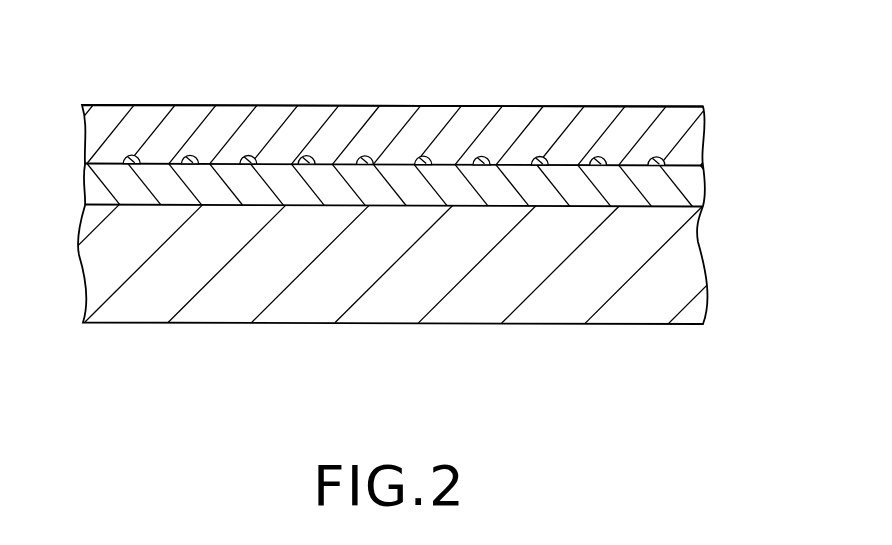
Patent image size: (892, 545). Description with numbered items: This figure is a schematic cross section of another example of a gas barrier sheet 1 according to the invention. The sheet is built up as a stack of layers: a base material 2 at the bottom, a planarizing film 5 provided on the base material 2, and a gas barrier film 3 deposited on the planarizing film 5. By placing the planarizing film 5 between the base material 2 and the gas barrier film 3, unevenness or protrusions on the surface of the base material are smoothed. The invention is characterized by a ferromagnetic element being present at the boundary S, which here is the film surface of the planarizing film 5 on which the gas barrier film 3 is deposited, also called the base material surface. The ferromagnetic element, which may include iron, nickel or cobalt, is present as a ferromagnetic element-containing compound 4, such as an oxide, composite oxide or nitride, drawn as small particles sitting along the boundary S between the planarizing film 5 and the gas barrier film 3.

The gas barrier sheet 1 is at (508, 385).
The base material 2 is at (693, 267).
The gas barrier film 3 is at (693, 140).
The ferromagnetic element-containing compound 4 is at (477, 156).
The planarizing film 5 is at (693, 186).
The boundary S is at (635, 165).